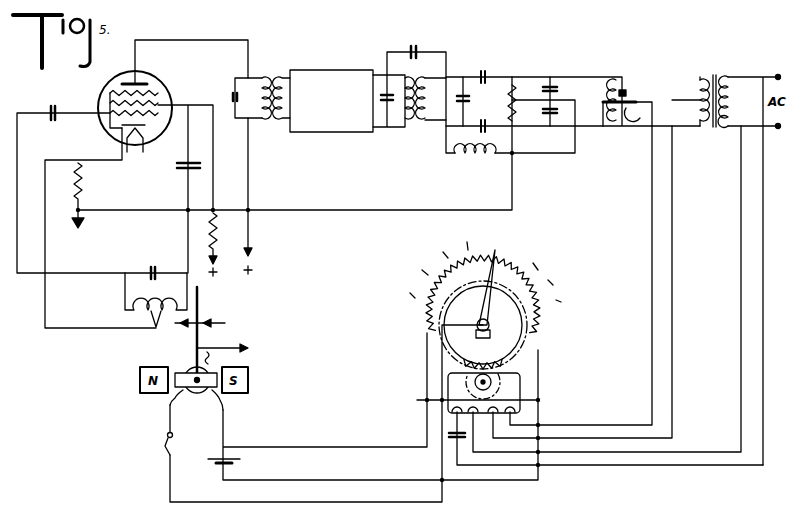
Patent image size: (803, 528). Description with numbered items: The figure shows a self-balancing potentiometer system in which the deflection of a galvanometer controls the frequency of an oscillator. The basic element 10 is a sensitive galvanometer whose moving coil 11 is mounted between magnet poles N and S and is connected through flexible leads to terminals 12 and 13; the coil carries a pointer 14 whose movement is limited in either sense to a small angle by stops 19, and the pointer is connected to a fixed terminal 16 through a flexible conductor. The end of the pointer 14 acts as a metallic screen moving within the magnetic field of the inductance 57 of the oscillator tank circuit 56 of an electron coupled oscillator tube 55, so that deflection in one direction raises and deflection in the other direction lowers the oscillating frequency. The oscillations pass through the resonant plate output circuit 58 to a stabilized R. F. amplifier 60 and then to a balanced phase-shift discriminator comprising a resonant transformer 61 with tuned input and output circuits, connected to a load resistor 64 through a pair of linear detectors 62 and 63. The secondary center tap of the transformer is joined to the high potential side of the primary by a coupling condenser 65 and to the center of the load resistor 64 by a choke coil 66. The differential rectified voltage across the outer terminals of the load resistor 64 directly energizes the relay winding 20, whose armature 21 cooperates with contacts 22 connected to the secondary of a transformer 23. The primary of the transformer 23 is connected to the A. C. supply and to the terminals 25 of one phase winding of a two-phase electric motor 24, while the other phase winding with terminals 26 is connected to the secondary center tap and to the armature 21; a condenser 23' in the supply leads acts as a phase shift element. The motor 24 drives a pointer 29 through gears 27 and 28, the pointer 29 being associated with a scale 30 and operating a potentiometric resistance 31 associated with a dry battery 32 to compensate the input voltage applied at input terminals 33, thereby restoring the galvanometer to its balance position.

The electron coupled oscillator tube 55 is at (163, 92).
The resonant plate output circuit 58 is at (252, 82).
The stabilized R. F. amplifier 60 is at (330, 70).
The resonant transformer 61 is at (426, 120).
The linear detector 62 is at (486, 70).
The linear detector 63 is at (484, 118).
The load resistor 64 is at (516, 84).
The coupling condenser 65 is at (418, 50).
The choke coil 66 is at (478, 158).
The relay winding 20 is at (618, 80).
The armature 21 is at (636, 100).
The contacts 22 is at (628, 92).
The transformer 23 is at (718, 92).
The condenser 23' is at (436, 451).
The oscillator tank circuit 56 is at (158, 275).
The inductance 57 is at (149, 330).
The primary or basic element 10 is at (184, 369).
The moving coil 11 is at (206, 395).
The terminal 12 is at (170, 407).
The terminal 13 is at (225, 410).
The pointer 14 is at (202, 338).
The fixed terminal 16 is at (198, 342).
The stops 19 is at (210, 320).
The input terminals 33 is at (165, 444).
The dry battery 32 is at (228, 458).
The potentiometric resistance 31 is at (425, 305).
The pointer 29 is at (483, 325).
The scale 30 is at (513, 256).
The gear 28 is at (515, 355).
The gear 27 is at (500, 373).
The two-phase electric motor 24 is at (520, 390).
The terminals 25 is at (520, 408).
The terminals 26 is at (403, 400).